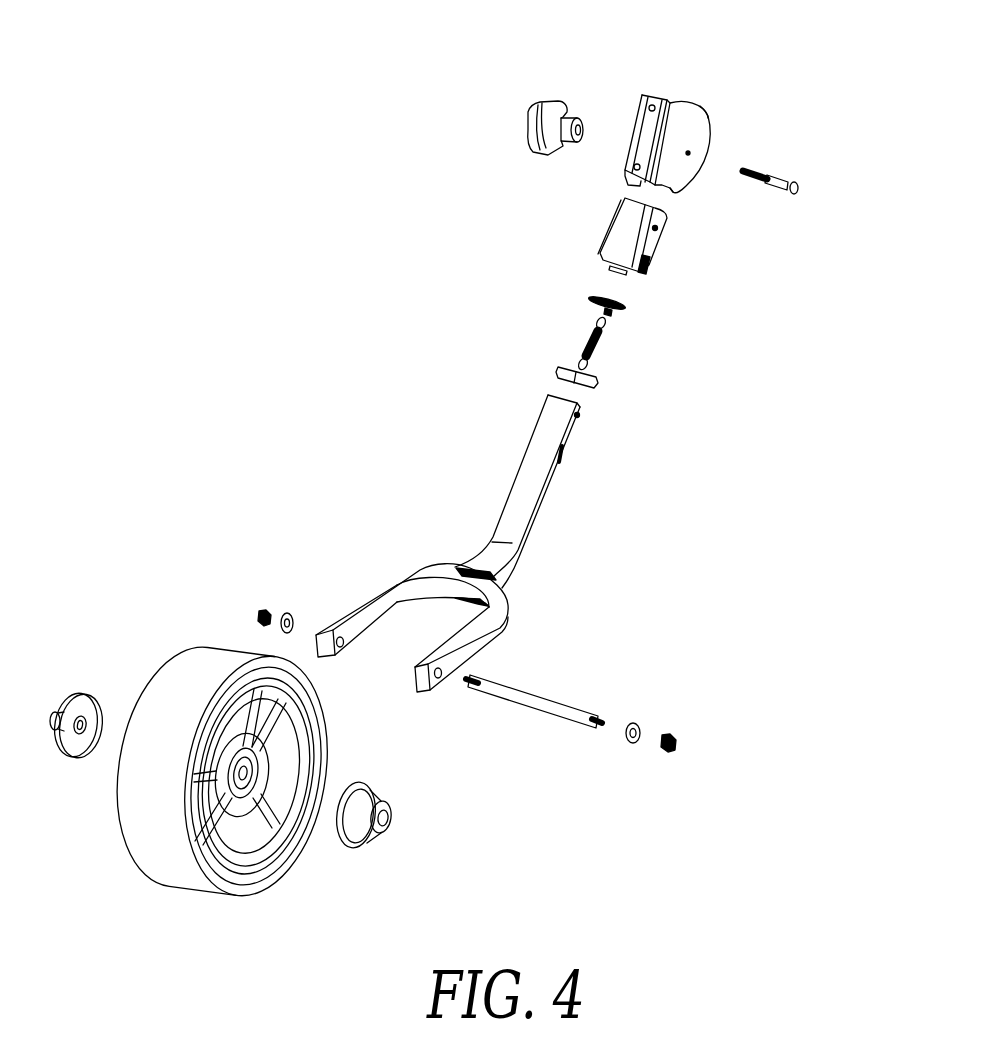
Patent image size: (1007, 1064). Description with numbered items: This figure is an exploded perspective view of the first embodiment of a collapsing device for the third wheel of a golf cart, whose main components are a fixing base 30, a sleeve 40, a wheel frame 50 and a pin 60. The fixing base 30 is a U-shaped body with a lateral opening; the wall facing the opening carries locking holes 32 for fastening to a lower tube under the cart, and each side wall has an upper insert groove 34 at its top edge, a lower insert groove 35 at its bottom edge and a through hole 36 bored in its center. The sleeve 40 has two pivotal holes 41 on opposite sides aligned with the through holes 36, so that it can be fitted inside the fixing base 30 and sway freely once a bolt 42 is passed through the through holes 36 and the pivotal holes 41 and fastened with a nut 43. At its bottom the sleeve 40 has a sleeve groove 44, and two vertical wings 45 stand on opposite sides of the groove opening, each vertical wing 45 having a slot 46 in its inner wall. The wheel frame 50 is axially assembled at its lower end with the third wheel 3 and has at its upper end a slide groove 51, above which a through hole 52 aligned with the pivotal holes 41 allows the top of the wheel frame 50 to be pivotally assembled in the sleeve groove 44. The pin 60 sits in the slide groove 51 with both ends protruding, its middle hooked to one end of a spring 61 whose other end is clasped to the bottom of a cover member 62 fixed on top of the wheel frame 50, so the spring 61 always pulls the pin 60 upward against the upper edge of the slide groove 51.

The third wheel 3 is at (272, 848).
The fixing base 30 is at (687, 117).
The locking holes 32 is at (652, 108).
The upper insert groove 34 is at (707, 118).
The lower insert groove 35 is at (673, 192).
The through hole 36 is at (689, 153).
The sleeve 40 is at (652, 245).
The pivotal holes 41 is at (657, 228).
The bolt 42 is at (802, 190).
The nut 43 is at (533, 127).
The sleeve groove 44 is at (623, 276).
The vertical wings 45 is at (643, 268).
The slot 46 is at (597, 254).
The wheel frame 50 is at (532, 523).
The slide groove 51 is at (563, 455).
The through hole 52 is at (580, 415).
The pin 60 is at (560, 371).
The spring 61 is at (598, 345).
The cover member 62 is at (588, 298).